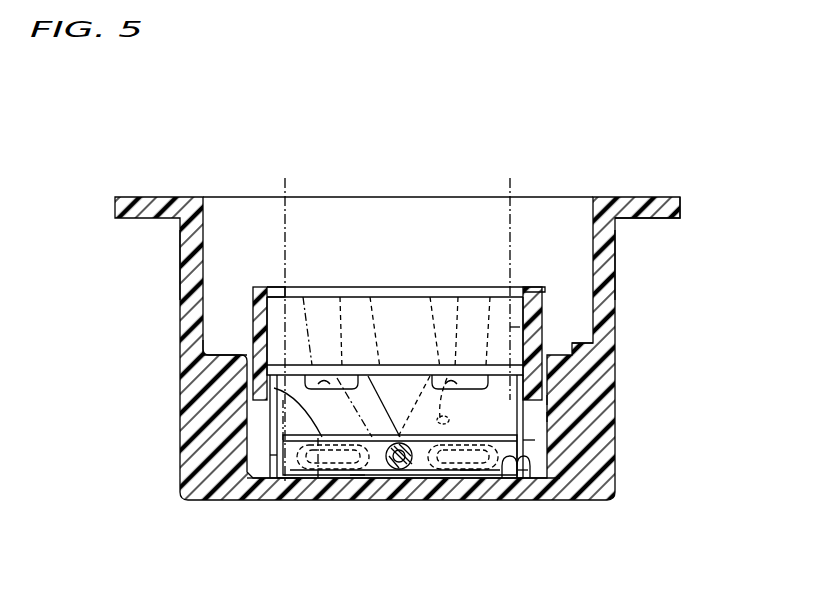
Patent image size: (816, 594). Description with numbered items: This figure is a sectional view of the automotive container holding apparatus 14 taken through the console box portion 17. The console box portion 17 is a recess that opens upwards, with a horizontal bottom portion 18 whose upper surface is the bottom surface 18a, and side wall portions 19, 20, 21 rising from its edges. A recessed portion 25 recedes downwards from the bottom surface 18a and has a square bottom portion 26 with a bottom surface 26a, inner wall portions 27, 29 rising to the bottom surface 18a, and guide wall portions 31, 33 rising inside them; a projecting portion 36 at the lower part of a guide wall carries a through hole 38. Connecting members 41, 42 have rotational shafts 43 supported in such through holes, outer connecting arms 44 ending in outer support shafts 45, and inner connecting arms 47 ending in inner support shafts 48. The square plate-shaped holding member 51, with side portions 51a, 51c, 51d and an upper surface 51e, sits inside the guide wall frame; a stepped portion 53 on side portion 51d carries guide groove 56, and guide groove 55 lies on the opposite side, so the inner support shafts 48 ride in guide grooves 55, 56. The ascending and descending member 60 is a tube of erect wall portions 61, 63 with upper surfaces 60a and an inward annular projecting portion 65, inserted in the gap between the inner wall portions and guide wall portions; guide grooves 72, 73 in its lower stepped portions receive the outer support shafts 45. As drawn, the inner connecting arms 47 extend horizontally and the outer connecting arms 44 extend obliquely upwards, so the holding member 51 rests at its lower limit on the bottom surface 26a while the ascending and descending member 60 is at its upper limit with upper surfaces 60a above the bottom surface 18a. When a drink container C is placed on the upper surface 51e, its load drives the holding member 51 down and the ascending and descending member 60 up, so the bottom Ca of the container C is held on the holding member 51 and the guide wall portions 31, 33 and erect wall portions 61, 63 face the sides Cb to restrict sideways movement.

The automotive container holding apparatus 14 is at (186, 180).
The console box portion 17 is at (648, 197).
The side wall portion 19 is at (222, 249).
The side wall portion 21 is at (580, 262).
The bottom portion 18 is at (215, 357).
The bottom surface 18a is at (585, 349).
The side wall portion 20 is at (335, 210).
The drink container C is at (281, 190).
The sides of the container Cb is at (512, 327).
The bottom of the container Ca is at (318, 478).
The ascending and descending member 60 is at (549, 276).
The upper surfaces of the erect wall portions 60a is at (526, 287).
The erect wall portion 61 is at (258, 313).
The erect wall portion 63 is at (543, 312).
The annular projecting portion 65 is at (285, 287).
The connecting member 41 is at (423, 363).
The guide groove 73 is at (303, 297).
The outer support shaft 45 is at (430, 297).
The outer connecting arm 44 is at (458, 297).
The guide groove 72 is at (490, 297).
The holding member 51 is at (268, 478).
The side portion 51a is at (268, 462).
The side portion 51c is at (540, 466).
The side portion 51d is at (295, 490).
The upper surface of the holding member 51e is at (275, 386).
The guide wall portion 31 is at (266, 418).
The inner wall portion 27 is at (255, 428).
The inner wall portion 29 is at (549, 418).
The guide wall portion 33 is at (548, 400).
The recessed portion 25 is at (578, 455).
The stepped portion 53 is at (268, 494).
The rotational shaft 43 is at (410, 476).
The projecting portion 36 is at (374, 472).
The inner connecting arm 47 is at (345, 472).
The inner support shaft 48 is at (300, 482).
The guide groove 55 is at (355, 476).
The through hole 38 is at (400, 470).
The guide groove 56 is at (445, 480).
The connecting member 42 is at (470, 478).
The bottom portion 26 is at (528, 486).
The bottom surface 26a is at (527, 474).